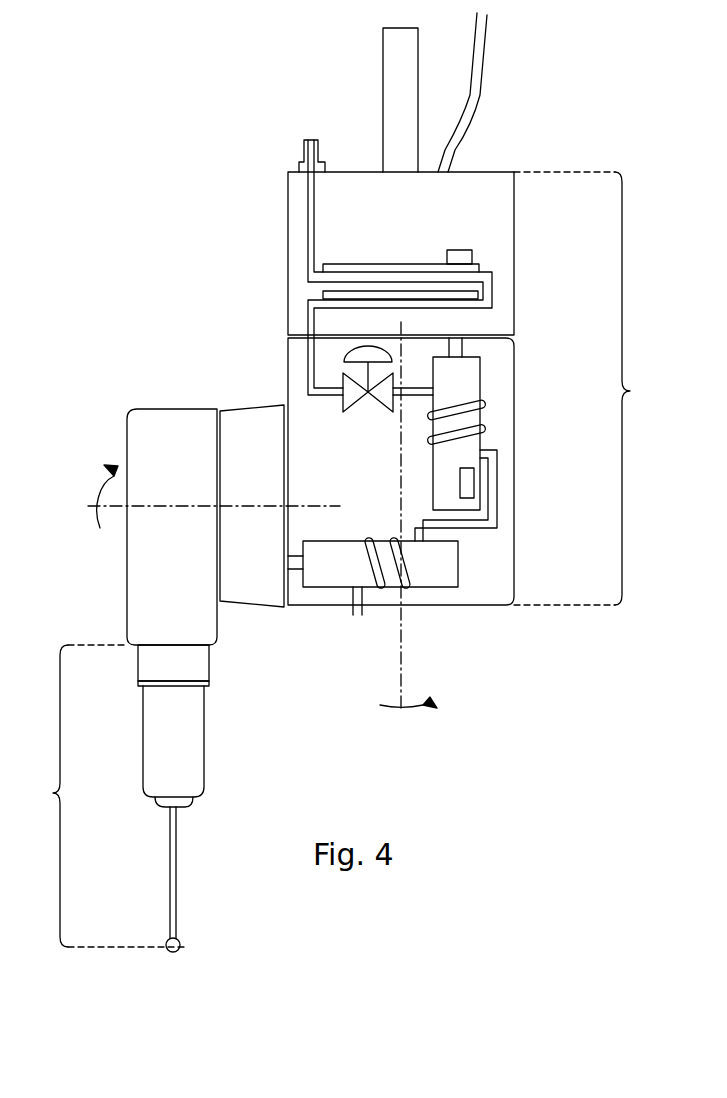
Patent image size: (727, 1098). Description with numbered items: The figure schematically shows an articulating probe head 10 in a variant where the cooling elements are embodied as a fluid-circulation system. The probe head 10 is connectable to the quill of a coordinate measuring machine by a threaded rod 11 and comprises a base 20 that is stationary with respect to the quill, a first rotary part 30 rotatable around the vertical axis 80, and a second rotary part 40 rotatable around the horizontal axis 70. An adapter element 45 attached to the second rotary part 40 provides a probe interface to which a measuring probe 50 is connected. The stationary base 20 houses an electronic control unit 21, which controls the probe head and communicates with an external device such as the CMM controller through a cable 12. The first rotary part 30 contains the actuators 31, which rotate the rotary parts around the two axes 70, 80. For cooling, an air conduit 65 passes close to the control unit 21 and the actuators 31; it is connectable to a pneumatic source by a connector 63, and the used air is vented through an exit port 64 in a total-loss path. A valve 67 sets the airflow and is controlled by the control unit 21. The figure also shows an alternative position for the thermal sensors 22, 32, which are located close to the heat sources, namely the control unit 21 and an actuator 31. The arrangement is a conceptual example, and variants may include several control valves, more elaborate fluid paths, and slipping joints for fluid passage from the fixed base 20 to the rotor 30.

The articulating probe head 10 is at (588, 388).
The threaded rod 11 is at (390, 57).
The cable 12 is at (482, 80).
The base 20 is at (470, 193).
The electronic control unit 21 is at (320, 264).
The thermal sensor 22 is at (467, 257).
The first rotary part 30 is at (290, 343).
The actuator 31 is at (472, 378).
The thermal sensor 32 is at (468, 485).
The second rotary part 40 is at (230, 422).
The adapter element 45 is at (133, 440).
The measuring probe 50 is at (112, 798).
The connector 63 is at (304, 146).
The exit port 64 is at (352, 612).
The air conduit 65 is at (314, 190).
The valve 67 is at (383, 393).
The horizontal axis 70 is at (190, 496).
The vertical axis 80 is at (408, 531).